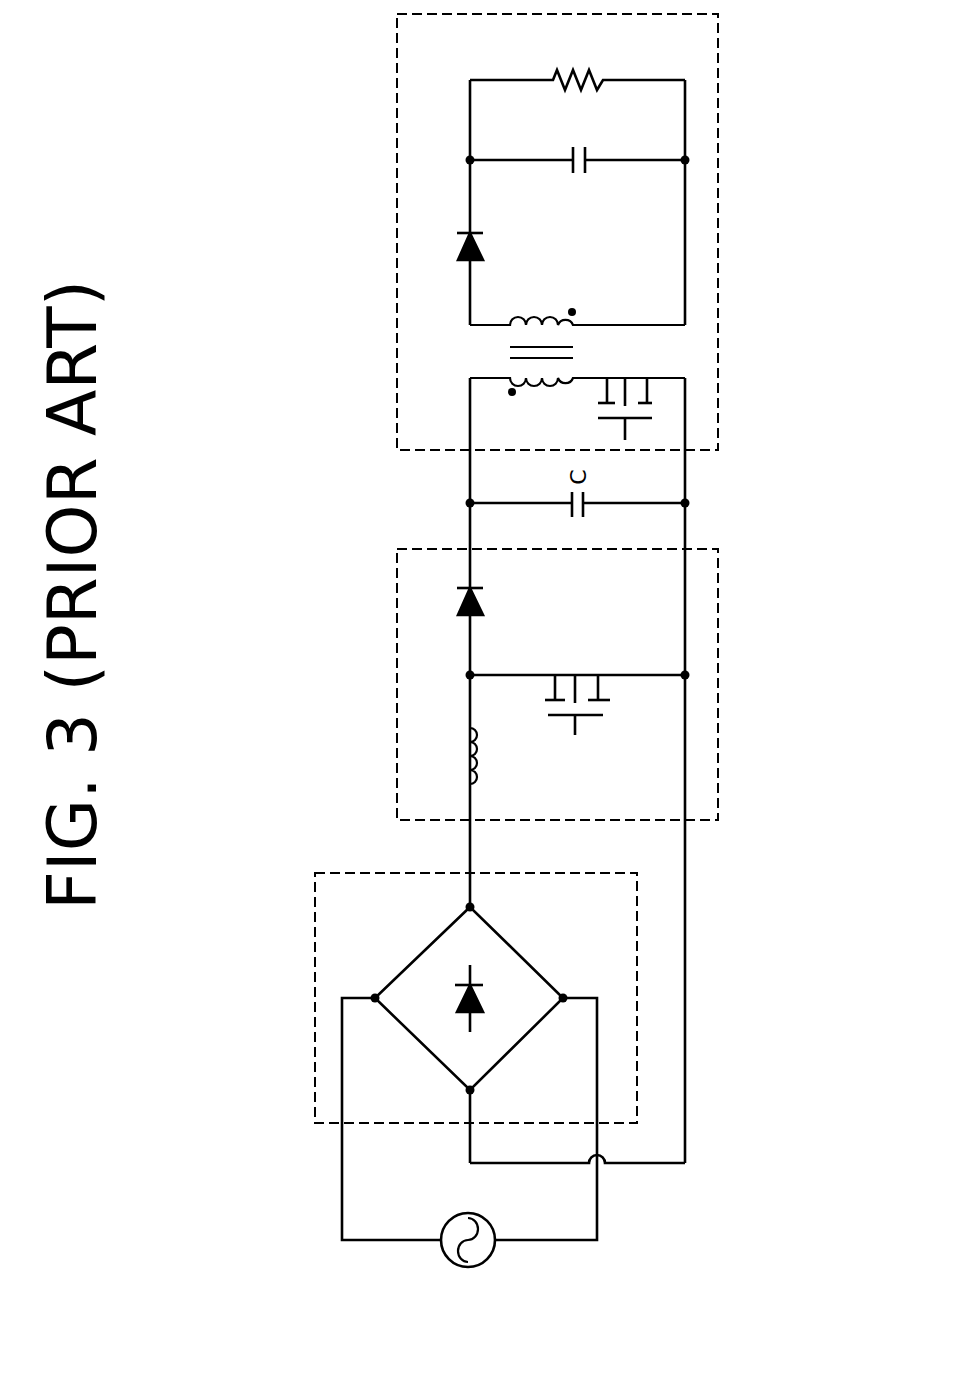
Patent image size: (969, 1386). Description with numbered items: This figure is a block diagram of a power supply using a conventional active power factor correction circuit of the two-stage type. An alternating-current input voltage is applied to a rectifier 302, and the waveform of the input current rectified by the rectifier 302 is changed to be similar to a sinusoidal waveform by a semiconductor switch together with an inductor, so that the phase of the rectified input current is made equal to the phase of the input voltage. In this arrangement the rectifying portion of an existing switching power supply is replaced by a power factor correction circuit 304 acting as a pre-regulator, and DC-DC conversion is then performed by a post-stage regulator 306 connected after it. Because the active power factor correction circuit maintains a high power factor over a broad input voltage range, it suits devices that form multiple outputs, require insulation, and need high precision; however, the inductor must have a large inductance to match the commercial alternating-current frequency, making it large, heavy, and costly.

The rectifier 302 is at (315, 1000).
The power factor correction circuit 304 is at (397, 679).
The post-stage regulator 306 is at (397, 228).